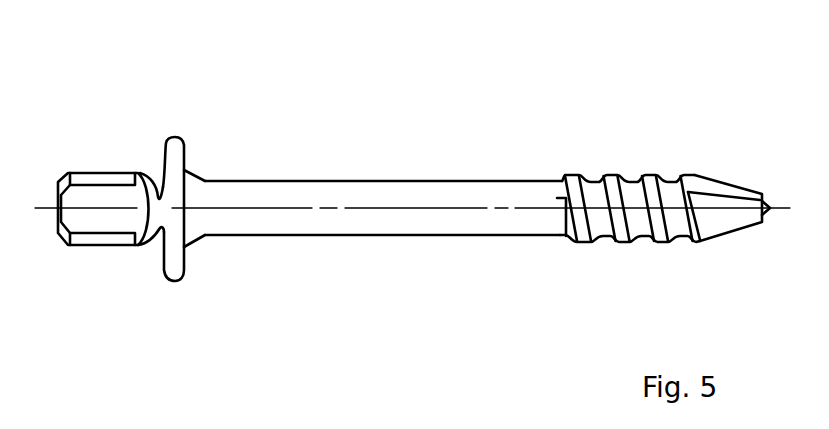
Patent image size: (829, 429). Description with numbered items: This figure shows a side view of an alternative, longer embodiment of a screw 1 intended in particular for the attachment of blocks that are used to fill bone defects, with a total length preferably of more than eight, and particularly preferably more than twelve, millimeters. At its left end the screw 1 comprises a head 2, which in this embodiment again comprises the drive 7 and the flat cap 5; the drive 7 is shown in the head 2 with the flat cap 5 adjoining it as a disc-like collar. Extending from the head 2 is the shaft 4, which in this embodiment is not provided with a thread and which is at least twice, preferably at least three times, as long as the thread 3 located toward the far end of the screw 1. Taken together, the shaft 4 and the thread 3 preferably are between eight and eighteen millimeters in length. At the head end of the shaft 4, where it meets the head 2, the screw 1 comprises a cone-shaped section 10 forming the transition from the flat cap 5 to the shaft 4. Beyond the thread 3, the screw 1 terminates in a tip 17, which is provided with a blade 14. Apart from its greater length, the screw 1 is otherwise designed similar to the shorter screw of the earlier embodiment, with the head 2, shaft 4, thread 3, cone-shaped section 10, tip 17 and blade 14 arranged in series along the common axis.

The screw 1 is at (428, 206).
The head 2 is at (144, 206).
The thread 3 is at (633, 200).
The shaft 4 is at (400, 205).
The flat cap 5 is at (173, 168).
The drive 7 is at (100, 208).
The cone-shaped section 10 is at (200, 190).
The blade 14 is at (754, 146).
The tip 17 is at (712, 218).